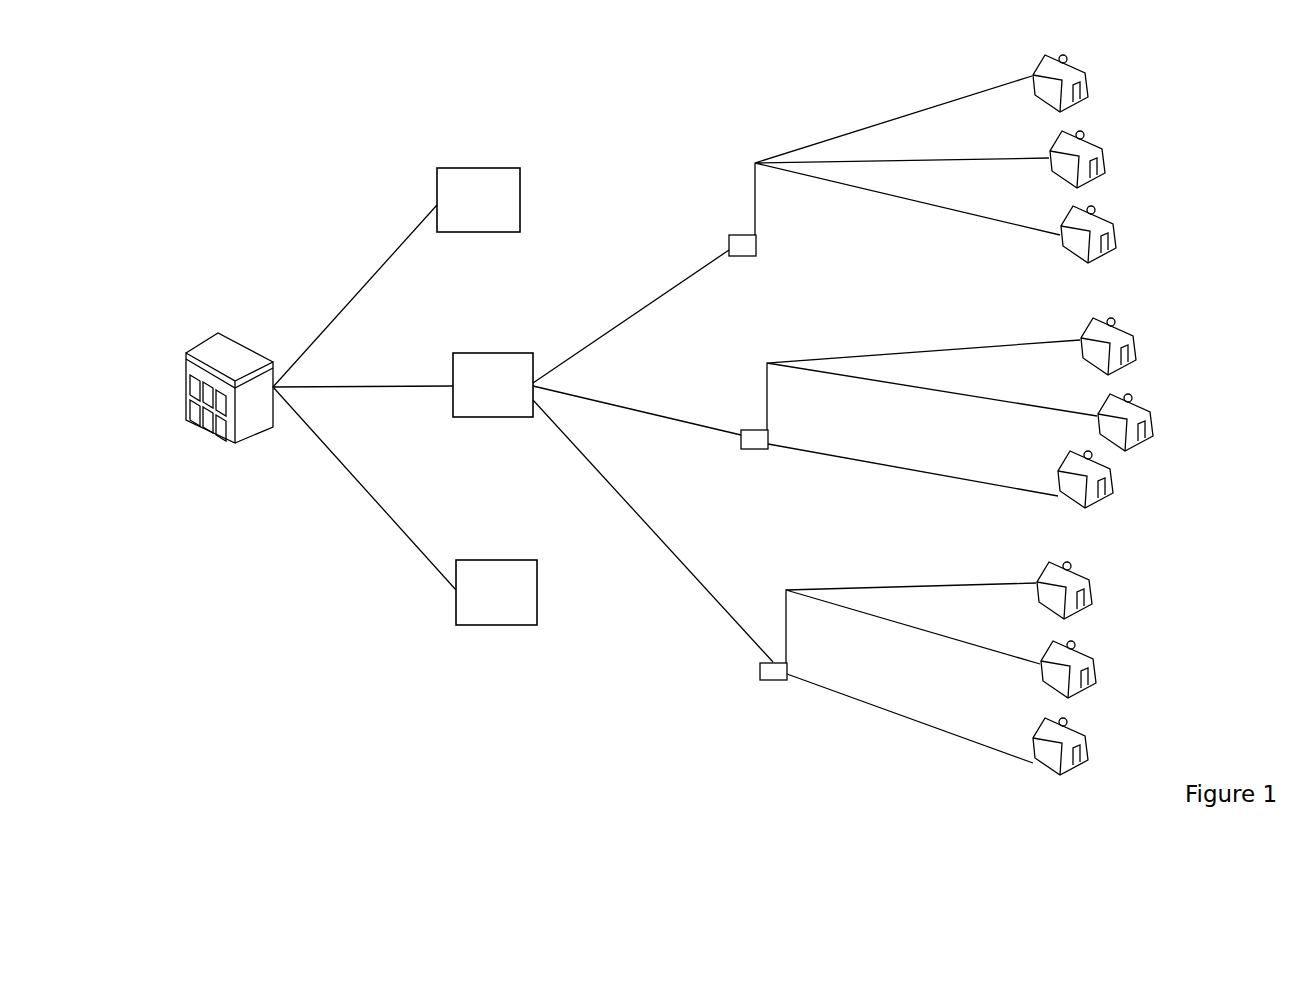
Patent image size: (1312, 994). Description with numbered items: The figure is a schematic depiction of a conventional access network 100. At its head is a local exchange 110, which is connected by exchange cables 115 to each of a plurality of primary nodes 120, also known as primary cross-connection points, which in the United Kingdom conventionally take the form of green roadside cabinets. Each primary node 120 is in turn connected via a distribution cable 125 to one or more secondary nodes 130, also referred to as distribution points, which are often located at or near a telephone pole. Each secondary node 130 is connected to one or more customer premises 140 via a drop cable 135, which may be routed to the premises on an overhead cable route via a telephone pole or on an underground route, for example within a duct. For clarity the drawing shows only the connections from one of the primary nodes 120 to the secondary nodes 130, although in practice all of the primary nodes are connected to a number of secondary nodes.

The access network 100 is at (267, 98).
The local exchange 110 is at (200, 423).
The exchange cables 115 is at (362, 382).
The primary nodes 120 is at (467, 418).
The distribution cable 125 is at (645, 415).
The secondary nodes 130 is at (735, 455).
The drop cable 135 is at (898, 415).
The customer premises 140 is at (1147, 400).